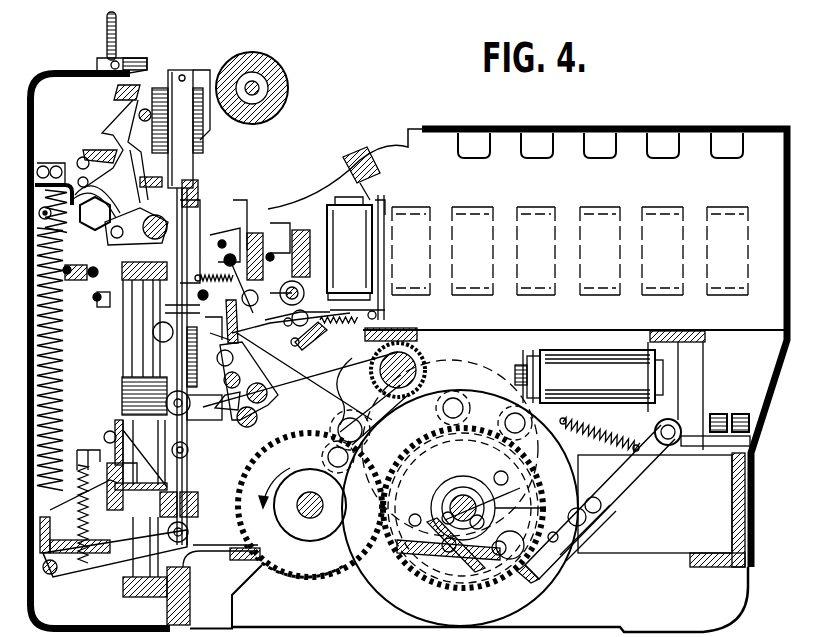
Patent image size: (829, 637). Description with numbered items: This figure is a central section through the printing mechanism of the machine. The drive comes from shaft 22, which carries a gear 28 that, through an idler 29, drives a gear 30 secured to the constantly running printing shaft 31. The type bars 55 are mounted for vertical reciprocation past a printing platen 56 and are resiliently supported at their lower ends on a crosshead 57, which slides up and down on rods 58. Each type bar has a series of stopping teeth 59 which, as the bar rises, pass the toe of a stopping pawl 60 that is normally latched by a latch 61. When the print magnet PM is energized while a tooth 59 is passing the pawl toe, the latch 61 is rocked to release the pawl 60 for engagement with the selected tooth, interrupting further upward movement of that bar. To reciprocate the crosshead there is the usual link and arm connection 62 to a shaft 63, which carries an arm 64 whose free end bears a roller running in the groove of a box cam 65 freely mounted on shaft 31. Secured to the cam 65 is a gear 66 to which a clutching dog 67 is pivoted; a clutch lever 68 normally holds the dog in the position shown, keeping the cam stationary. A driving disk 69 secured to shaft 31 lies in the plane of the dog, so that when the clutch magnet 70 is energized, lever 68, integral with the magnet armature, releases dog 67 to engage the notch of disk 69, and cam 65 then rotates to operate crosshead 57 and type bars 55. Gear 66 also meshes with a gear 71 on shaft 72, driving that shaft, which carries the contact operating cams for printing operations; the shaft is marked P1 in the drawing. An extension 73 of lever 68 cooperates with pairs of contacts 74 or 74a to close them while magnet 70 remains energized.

The type bars 55 is at (184, 95).
The printing platen 56 is at (290, 94).
The latch 61 is at (218, 265).
The stopping pawl 60 is at (198, 305).
The rods 58 is at (140, 360).
The stopping teeth 59 is at (200, 357).
The link and arm connection 62 is at (215, 418).
The crosshead 57 is at (143, 474).
The shaft 63 is at (410, 356).
The idler 29 is at (468, 362).
The arm 64 is at (440, 380).
The gear 28 is at (462, 476).
The gear 30 is at (530, 468).
The shaft 22 is at (310, 505).
The shaft 72 is at (292, 516).
The shaft P1 is at (313, 532).
The gear 71 is at (315, 568).
The printing shaft 31 is at (410, 545).
The gear 66 is at (442, 560).
The clutching dog 67 is at (498, 570).
The driving disk 69 is at (540, 520).
The box cam 65 is at (545, 578).
The clutch lever 68 is at (634, 468).
The clutch magnet 70 is at (589, 376).
The extension 73 is at (710, 440).
The contacts 74a is at (714, 414).
The contacts 74 is at (750, 422).
The print magnet PM is at (356, 233).